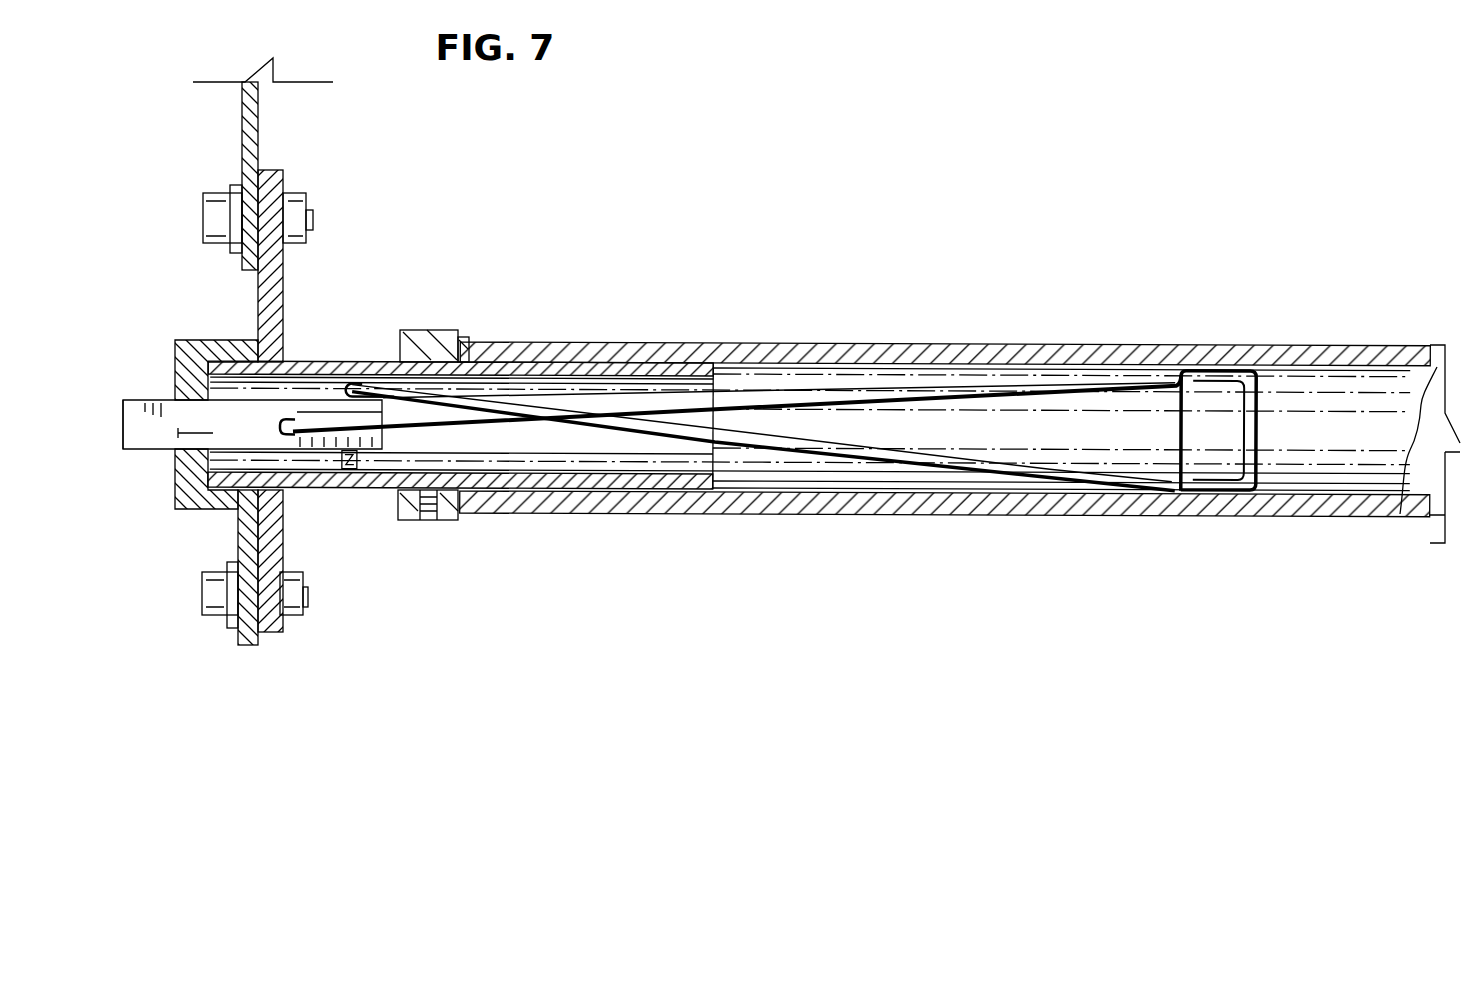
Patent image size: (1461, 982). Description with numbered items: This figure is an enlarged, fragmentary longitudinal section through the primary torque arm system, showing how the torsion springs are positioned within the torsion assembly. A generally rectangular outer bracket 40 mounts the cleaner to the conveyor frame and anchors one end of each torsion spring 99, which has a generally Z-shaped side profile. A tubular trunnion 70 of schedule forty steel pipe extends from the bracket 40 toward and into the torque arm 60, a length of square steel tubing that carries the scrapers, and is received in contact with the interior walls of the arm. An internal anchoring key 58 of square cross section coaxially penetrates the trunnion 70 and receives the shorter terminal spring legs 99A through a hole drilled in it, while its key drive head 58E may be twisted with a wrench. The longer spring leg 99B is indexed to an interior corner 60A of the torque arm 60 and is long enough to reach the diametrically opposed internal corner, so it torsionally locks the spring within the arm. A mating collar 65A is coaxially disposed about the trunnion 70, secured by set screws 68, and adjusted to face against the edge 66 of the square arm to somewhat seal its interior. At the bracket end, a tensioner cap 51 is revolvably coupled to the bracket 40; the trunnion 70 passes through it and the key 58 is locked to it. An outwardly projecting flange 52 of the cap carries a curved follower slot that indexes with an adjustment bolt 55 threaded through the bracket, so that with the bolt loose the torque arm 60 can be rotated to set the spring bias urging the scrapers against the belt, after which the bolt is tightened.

The outer bracket 40 is at (276, 268).
The tensioner cap 51 is at (196, 522).
The flange 52 is at (246, 646).
The adjustment bolt 55 is at (205, 600).
The anchoring key 58 is at (172, 436).
The key drive head 58E is at (131, 399).
The torque arm 60 is at (884, 345).
The interior corner 60A is at (1165, 408).
The mating collar 65A is at (428, 337).
The edge 66 is at (462, 353).
The set screw 68 is at (430, 520).
The tubular trunnion 70 is at (587, 362).
The torsion spring 99 is at (746, 400).
The terminal spring leg 99A is at (283, 420).
The spring leg 99B is at (1140, 383).